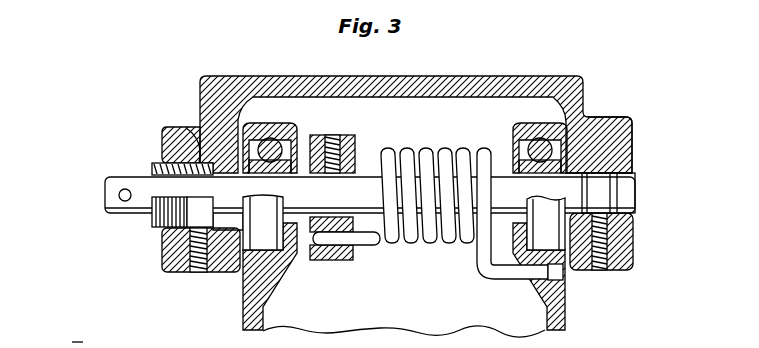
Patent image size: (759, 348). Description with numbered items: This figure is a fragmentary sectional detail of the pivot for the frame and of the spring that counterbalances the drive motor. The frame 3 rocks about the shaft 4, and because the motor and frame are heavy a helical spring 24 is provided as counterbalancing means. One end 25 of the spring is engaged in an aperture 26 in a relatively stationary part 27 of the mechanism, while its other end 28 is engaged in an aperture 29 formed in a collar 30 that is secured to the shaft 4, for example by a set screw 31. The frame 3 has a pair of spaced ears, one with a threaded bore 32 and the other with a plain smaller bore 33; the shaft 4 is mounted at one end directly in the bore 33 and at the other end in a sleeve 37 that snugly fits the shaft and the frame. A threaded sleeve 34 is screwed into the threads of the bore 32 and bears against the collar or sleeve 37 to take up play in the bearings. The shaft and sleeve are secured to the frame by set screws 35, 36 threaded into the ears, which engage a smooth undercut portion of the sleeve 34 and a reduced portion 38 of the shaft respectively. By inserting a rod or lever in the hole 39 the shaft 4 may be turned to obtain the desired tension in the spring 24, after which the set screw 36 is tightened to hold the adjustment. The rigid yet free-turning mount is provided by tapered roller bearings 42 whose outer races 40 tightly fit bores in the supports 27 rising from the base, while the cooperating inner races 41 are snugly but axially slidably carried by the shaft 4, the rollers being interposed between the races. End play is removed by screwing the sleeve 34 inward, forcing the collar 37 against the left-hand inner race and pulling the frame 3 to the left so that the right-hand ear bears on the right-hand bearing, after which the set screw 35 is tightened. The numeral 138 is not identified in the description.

The frame 3 is at (575, 108).
The shaft 4 is at (105, 205).
The helical spring 24 is at (434, 236).
The spring end 25 is at (527, 276).
The aperture 26 is at (561, 276).
The relatively stationary part 27 is at (253, 318).
The spring end 28 is at (368, 245).
The aperture 29 is at (314, 240).
The collar 30 is at (352, 137).
The set screw 31 is at (356, 160).
The threaded bore 32 is at (163, 136).
The plain smaller bore 33 is at (624, 164).
The threaded sleeve 34 is at (158, 224).
The set screw 35 is at (163, 250).
The set screw 36 is at (632, 229).
The sleeve 37 is at (224, 205).
The reduced portion 38 is at (598, 199).
The hole 39 is at (127, 189).
The outer races 40 is at (283, 128).
The inner races 41 is at (288, 180).
The tapered roller bearings 42 is at (297, 140).
The base 138 is at (96, 339).